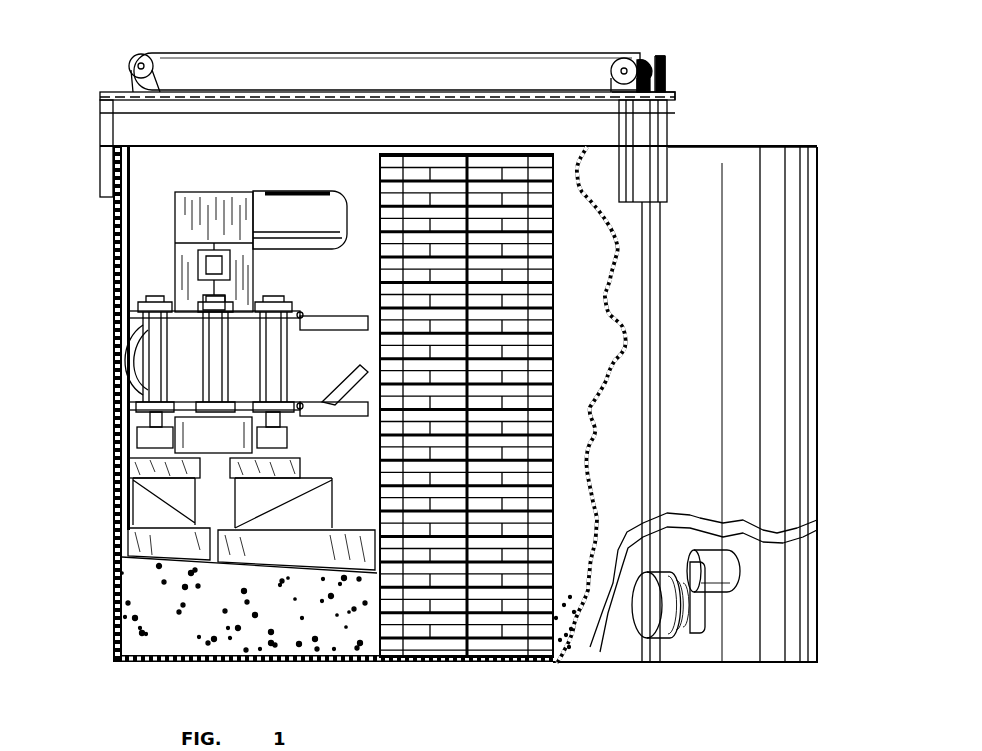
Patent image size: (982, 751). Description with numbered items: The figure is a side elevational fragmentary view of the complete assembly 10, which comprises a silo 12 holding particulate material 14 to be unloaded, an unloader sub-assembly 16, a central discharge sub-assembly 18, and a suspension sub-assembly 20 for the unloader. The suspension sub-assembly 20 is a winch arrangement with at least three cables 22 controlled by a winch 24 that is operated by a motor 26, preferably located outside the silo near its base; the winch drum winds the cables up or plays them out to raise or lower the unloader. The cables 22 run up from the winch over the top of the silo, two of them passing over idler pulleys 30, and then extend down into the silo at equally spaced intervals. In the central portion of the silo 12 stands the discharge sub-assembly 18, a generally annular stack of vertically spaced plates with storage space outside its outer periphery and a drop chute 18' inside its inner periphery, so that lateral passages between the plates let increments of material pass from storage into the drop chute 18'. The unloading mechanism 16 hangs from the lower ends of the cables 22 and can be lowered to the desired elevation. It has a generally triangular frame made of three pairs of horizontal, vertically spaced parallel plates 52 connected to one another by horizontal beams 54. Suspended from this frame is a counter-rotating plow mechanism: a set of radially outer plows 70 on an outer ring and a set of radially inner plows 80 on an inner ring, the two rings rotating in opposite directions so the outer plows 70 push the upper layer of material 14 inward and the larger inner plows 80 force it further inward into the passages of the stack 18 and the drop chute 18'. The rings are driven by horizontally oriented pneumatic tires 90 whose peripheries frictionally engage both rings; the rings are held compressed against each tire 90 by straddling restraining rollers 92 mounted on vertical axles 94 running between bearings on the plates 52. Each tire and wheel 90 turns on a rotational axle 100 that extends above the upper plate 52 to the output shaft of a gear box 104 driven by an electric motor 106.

The complete assembly 10 is at (716, 99).
The silo 12 is at (818, 242).
The particulate material 14 is at (145, 615).
The unloader sub-assembly 16 is at (127, 396).
The central discharge sub-assembly 18 is at (503, 405).
The drop chute 18' is at (553, 490).
The suspension sub-assembly 20 is at (650, 58).
The cables 22 is at (408, 52).
The winch 24 is at (700, 625).
The motor 26 is at (728, 568).
The idler pulleys 30 is at (617, 58).
The plates 52 is at (298, 308).
The horizontal beams 54 is at (335, 320).
The radially outer plows 70 is at (177, 551).
The radially inner plows 80 is at (314, 561).
The pneumatic tires 90 is at (224, 444).
The restraining rollers 92 is at (137, 443).
The vertical axles 94 is at (143, 425).
The rotational axle 100 is at (210, 353).
The gear box 104 is at (200, 205).
The electric motor 106 is at (318, 208).